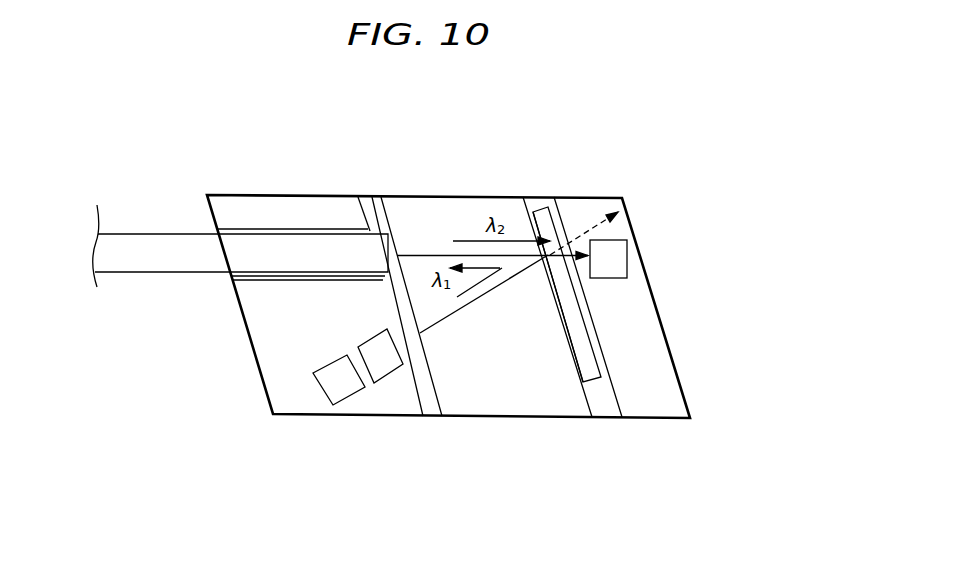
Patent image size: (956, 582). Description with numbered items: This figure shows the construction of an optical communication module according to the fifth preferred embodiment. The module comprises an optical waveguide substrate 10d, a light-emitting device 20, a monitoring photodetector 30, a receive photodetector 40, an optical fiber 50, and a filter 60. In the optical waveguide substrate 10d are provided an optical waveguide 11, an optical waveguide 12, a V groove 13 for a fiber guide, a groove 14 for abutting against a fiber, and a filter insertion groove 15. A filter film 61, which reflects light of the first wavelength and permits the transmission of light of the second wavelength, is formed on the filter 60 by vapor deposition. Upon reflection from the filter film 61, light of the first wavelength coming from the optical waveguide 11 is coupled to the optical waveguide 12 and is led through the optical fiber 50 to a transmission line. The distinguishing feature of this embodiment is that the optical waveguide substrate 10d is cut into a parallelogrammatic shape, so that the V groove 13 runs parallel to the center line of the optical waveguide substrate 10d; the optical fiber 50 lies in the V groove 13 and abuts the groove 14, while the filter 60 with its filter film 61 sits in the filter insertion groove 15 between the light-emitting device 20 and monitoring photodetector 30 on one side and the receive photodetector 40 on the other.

The optical waveguide substrate 10d is at (375, 197).
The optical waveguide 11 is at (487, 293).
The optical waveguide 12 is at (433, 254).
The V groove for fiber guide 13 is at (235, 229).
The groove for abutting against fiber 14 is at (432, 408).
The filter insertion groove 15 is at (606, 405).
The light-emitting device 20 is at (358, 347).
The monitoring photodetector 30 is at (333, 402).
The receive photodetector 40 is at (624, 253).
The optical fiber 50 is at (143, 248).
The filter 60 is at (556, 197).
The filter film 61 is at (534, 211).